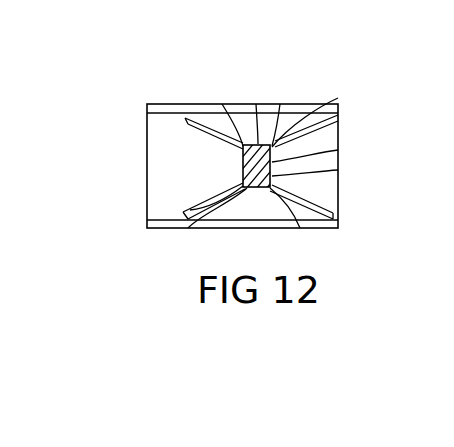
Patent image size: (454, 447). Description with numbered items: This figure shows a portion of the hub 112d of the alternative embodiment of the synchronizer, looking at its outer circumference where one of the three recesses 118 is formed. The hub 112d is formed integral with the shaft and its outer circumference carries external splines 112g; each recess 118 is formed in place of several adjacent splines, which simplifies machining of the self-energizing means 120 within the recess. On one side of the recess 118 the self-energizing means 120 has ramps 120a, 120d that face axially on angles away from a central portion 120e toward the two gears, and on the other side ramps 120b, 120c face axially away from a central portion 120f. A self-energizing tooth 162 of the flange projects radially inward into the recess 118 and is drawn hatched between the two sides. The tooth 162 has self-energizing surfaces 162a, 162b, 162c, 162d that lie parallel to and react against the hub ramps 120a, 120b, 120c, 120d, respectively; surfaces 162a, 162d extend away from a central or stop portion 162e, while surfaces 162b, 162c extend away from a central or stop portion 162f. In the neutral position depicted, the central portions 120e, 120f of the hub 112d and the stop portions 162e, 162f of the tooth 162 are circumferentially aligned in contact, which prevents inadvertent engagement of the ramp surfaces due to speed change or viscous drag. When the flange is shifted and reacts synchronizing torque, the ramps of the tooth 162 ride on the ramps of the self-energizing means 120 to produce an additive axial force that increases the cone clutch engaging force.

The annular member/hub 112d is at (202, 54).
The external splines 112g is at (280, 104).
The recesses 118 is at (178, 182).
The self-energizing means 120 is at (341, 190).
The ramp 120a is at (338, 222).
The ramp 120b is at (340, 115).
The ramp 120c is at (185, 119).
The ramp 120d is at (186, 221).
The central portion 120e is at (338, 170).
The central portion 120f is at (338, 150).
The self-energizing teeth 162 is at (222, 157).
The self-energizing surface 162a is at (190, 210).
The self-energizing surface 162b is at (222, 104).
The self-energizing surface 162c is at (338, 98).
The self-energizing surface 162d is at (300, 228).
The central or stop portion 162e is at (188, 228).
The central or stop portion 162f is at (256, 104).